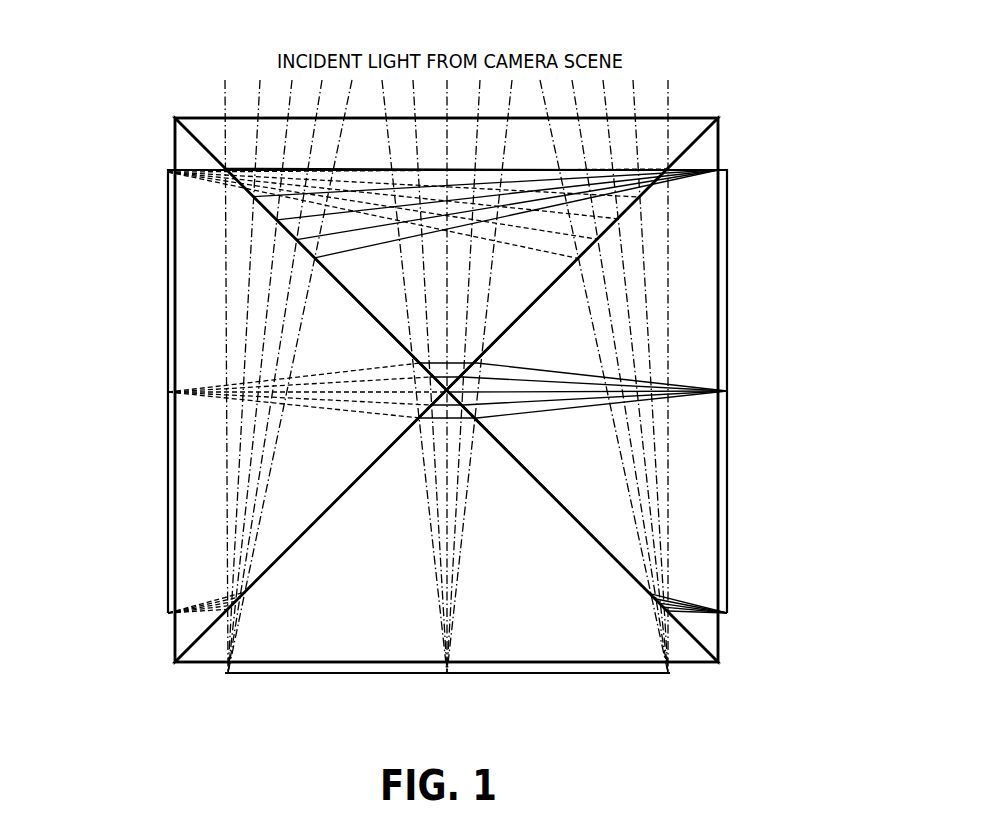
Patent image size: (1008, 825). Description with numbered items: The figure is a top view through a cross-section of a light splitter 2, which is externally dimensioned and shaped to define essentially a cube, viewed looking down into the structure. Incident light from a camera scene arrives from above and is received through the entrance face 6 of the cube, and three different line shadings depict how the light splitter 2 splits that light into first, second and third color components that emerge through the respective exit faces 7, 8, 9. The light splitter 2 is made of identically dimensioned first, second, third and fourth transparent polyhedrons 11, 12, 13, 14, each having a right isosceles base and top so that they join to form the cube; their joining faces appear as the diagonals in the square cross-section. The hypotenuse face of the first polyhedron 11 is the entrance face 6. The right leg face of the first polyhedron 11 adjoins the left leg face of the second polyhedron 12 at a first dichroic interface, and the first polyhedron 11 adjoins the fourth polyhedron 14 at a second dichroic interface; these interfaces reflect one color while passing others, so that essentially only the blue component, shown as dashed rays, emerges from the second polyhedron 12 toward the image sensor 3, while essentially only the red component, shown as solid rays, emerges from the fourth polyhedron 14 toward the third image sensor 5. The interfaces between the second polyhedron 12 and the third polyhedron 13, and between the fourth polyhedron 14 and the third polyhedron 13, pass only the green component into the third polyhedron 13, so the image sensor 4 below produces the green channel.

The light splitter 2 is at (448, 425).
The image sensor 3 is at (167, 218).
The image sensor 4 is at (630, 667).
The third image sensor 5 is at (727, 588).
The entrance face 6 is at (197, 118).
The exit face 7 is at (175, 143).
The exit face 8 is at (208, 664).
The exit face 9 is at (720, 145).
The first transparent polyhedron 11 is at (383, 278).
The second transparent polyhedron 12 is at (333, 460).
The third transparent polyhedron 13 is at (531, 546).
The fourth transparent polyhedron 14 is at (586, 454).